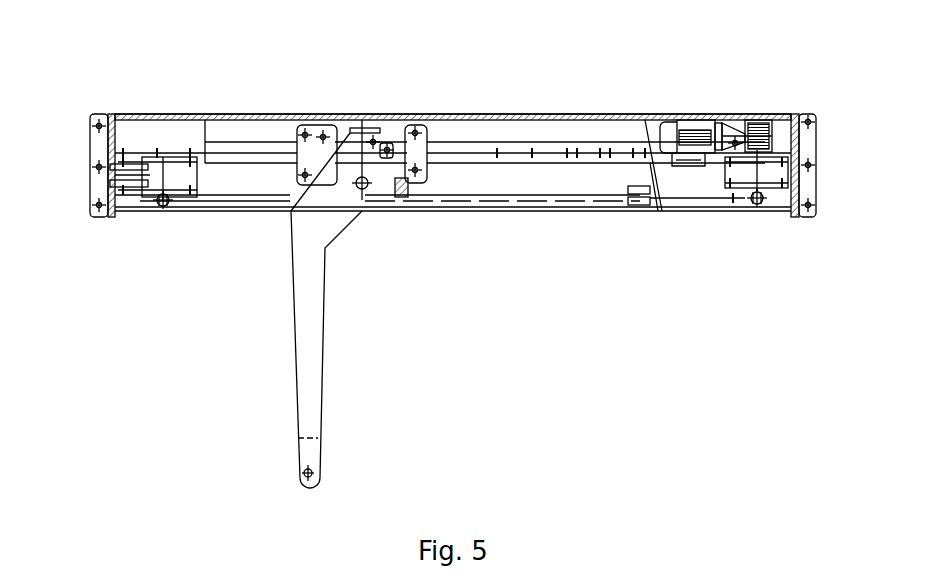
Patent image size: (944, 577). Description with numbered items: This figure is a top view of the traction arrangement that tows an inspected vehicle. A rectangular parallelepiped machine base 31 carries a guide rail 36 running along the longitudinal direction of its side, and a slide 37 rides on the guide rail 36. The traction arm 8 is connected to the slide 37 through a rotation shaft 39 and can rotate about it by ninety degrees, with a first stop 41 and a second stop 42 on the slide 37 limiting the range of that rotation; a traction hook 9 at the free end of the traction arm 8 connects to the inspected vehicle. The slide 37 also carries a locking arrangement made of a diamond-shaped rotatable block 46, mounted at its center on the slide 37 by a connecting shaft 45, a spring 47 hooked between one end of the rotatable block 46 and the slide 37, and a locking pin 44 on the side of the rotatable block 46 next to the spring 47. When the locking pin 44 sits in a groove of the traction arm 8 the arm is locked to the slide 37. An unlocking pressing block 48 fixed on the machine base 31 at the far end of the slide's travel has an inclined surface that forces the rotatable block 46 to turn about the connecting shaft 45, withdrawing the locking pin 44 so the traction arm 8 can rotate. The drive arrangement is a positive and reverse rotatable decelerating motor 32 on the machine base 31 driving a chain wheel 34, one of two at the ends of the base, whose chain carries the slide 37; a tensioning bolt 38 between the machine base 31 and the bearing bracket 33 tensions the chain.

The traction arm 8 is at (250, 310).
The traction hook 9 is at (226, 441).
The machine base 31 is at (486, 123).
The positive and reverse rotatable decelerating motor 32 is at (770, 90).
The bearing bracket 33 is at (481, 151).
The chain wheel 34 is at (718, 237).
The guide rail 36 is at (453, 108).
The slide 37 is at (455, 106).
The tensioning bolt 38 is at (89, 141).
The rotation shaft 39 is at (375, 233).
The first stop 41 is at (433, 117).
The second stop 42 is at (424, 233).
The locking pin 44 is at (337, 71).
The connecting shaft 45 is at (361, 100).
The rotatable block 46 is at (390, 100).
The spring 47 is at (290, 108).
The unlocking pressing block 48 is at (716, 101).